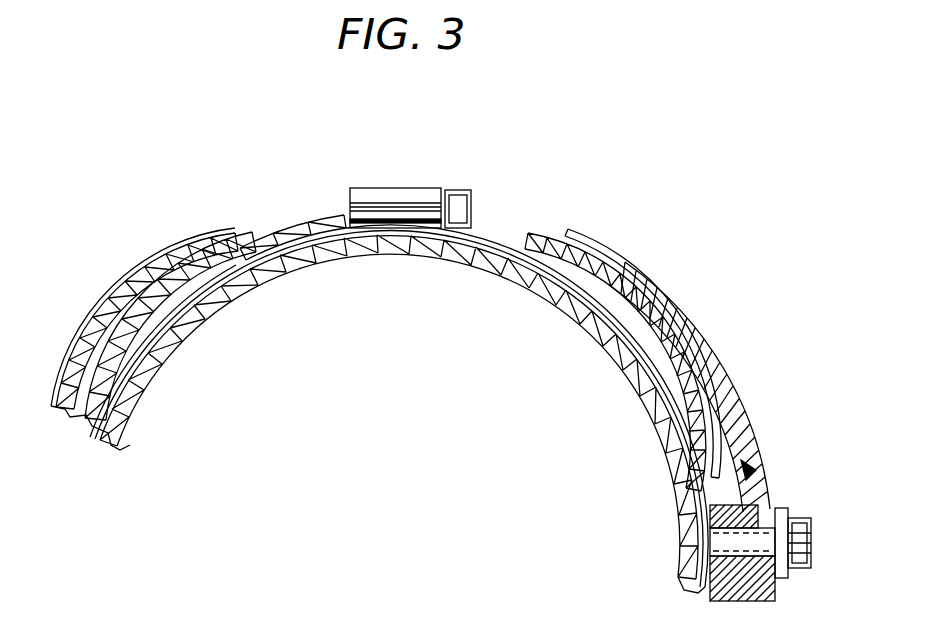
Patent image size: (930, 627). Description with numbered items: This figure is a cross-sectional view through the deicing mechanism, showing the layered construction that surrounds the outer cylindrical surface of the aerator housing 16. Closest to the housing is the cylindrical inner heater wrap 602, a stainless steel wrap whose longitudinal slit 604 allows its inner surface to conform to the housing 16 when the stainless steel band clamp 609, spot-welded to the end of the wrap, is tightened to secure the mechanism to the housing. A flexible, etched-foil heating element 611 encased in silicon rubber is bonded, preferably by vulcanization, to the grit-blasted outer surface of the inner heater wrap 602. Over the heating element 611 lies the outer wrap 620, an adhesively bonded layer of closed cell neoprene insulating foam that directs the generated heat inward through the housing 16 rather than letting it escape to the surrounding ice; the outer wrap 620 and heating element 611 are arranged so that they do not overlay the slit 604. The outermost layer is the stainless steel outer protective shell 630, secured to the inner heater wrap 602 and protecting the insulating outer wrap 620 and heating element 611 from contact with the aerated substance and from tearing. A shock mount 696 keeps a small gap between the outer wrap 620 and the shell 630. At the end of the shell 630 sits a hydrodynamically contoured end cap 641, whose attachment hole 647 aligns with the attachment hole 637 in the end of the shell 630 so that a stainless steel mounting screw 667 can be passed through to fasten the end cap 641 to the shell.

The housing 16 is at (217, 313).
The longitudinal slit 604 is at (360, 228).
The outer wrap 620 is at (246, 222).
The end cap 641 is at (120, 261).
The heating element 611 is at (297, 214).
The band clamp 609 is at (420, 180).
The inner heater wrap 602 is at (505, 233).
The outer protective shell 630 is at (613, 243).
The shock mount 696 is at (757, 440).
The attachment hole 637 is at (752, 487).
The mounting screw 667 is at (800, 519).
The attachment hole 647 is at (762, 587).